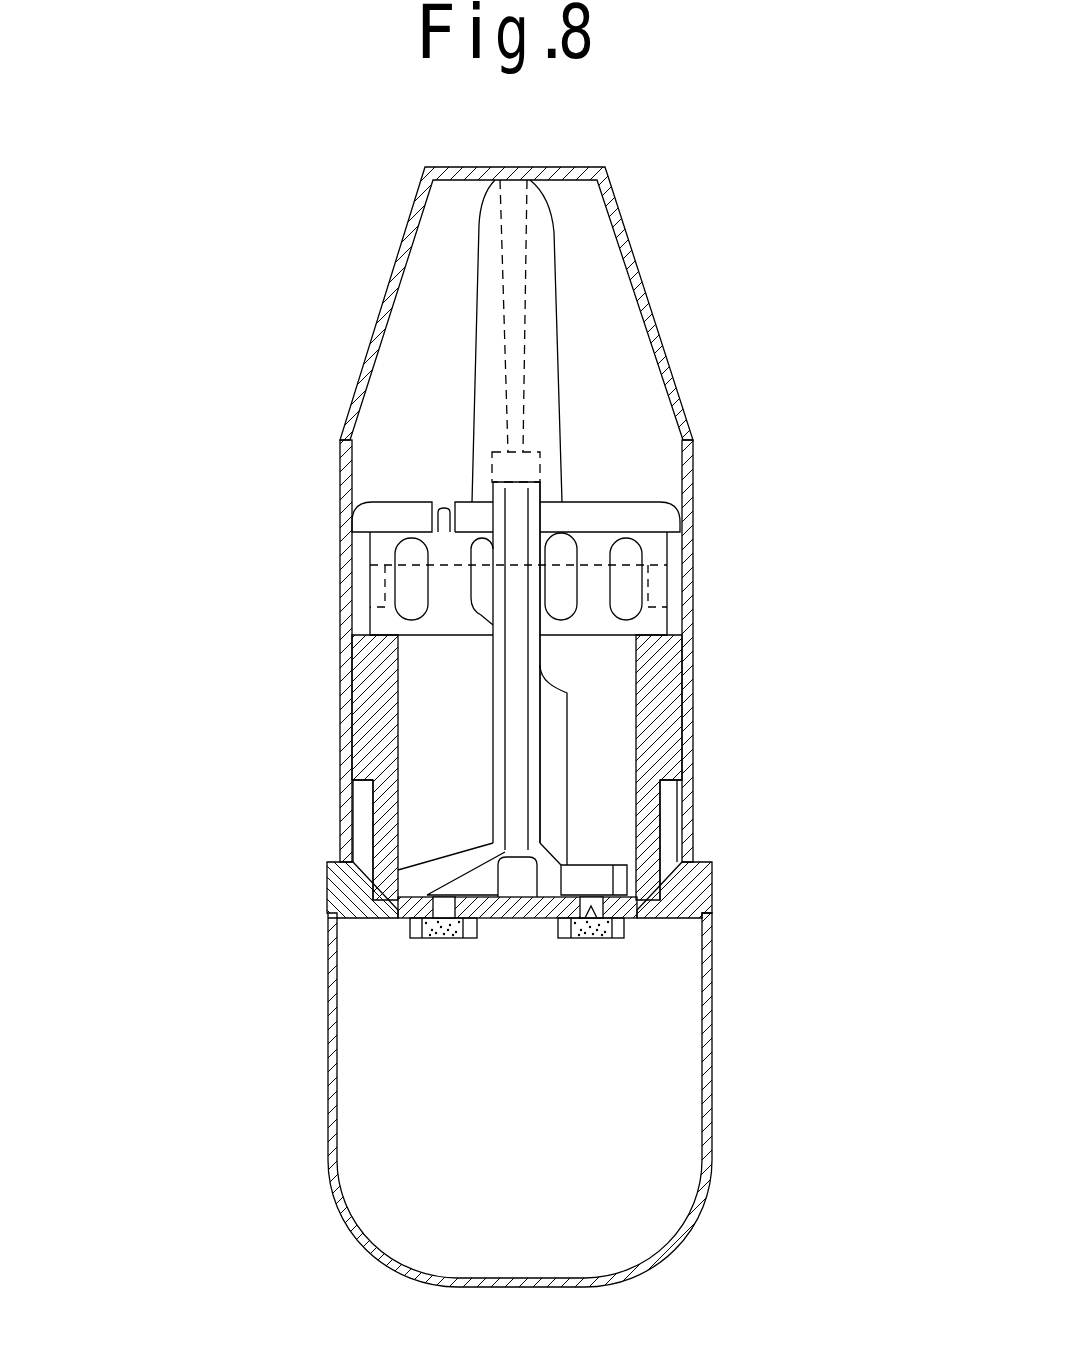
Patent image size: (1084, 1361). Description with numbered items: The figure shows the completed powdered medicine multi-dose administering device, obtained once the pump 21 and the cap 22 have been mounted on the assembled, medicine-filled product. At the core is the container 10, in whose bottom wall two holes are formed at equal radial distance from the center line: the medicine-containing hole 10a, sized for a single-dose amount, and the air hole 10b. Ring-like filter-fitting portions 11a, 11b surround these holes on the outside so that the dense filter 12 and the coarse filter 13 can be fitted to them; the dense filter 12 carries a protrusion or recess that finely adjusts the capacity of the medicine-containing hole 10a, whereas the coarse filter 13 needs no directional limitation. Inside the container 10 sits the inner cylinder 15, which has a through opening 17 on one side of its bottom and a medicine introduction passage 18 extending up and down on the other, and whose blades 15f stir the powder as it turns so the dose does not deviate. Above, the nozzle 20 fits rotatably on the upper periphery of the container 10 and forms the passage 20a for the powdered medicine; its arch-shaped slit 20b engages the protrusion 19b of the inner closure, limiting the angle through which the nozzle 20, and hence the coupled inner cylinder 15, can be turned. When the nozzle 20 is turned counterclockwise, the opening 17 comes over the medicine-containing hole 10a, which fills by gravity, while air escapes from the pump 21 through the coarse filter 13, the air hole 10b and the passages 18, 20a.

The cap 22 is at (627, 240).
The nozzle 20 is at (566, 409).
The passage 20a is at (515, 333).
The arch-shaped slit 20b is at (444, 508).
The protrusion 19b is at (433, 495).
The container 10 is at (689, 653).
The medicine introduction passage 18 is at (518, 731).
The inner cylinder 15 is at (540, 721).
The blades 15f is at (567, 773).
The through opening 17 is at (580, 878).
The medicine-containing hole 10a is at (637, 910).
The air hole 10b is at (400, 905).
The filter-fitting portion 11a is at (626, 928).
The filter-fitting portion 11b is at (410, 928).
The dense filter 12 is at (592, 942).
The coarse filter 13 is at (440, 936).
The pump 21 is at (713, 1115).